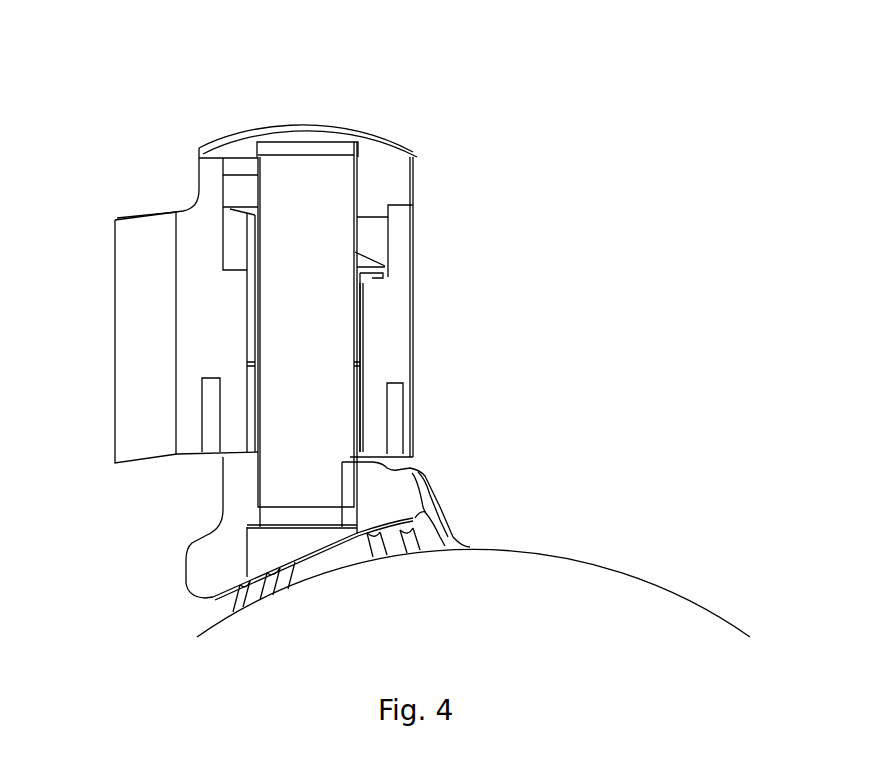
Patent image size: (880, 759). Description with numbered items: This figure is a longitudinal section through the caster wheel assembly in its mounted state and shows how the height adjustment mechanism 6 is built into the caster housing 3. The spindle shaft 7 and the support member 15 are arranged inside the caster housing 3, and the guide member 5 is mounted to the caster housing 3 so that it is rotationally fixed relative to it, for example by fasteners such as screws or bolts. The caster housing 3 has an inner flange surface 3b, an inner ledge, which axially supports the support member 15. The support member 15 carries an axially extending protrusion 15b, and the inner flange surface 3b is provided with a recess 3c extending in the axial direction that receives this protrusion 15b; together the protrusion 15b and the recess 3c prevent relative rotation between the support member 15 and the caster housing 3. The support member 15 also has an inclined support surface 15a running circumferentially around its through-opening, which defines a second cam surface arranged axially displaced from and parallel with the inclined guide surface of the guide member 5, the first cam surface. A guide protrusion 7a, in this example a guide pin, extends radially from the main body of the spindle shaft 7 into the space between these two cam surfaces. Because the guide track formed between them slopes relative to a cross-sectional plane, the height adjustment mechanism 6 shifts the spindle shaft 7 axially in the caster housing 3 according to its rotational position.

The caster housing 3 is at (412, 402).
The inner flange surface 3b is at (243, 272).
The recess 3c is at (363, 282).
The guide member 5 is at (240, 150).
The height adjustment mechanism 6 is at (182, 194).
The spindle shaft 7 is at (333, 190).
The guide protrusion 7a is at (231, 187).
The support member 15 is at (228, 227).
The inclined support surface 15a is at (365, 253).
The axially extending protrusion 15b is at (373, 280).